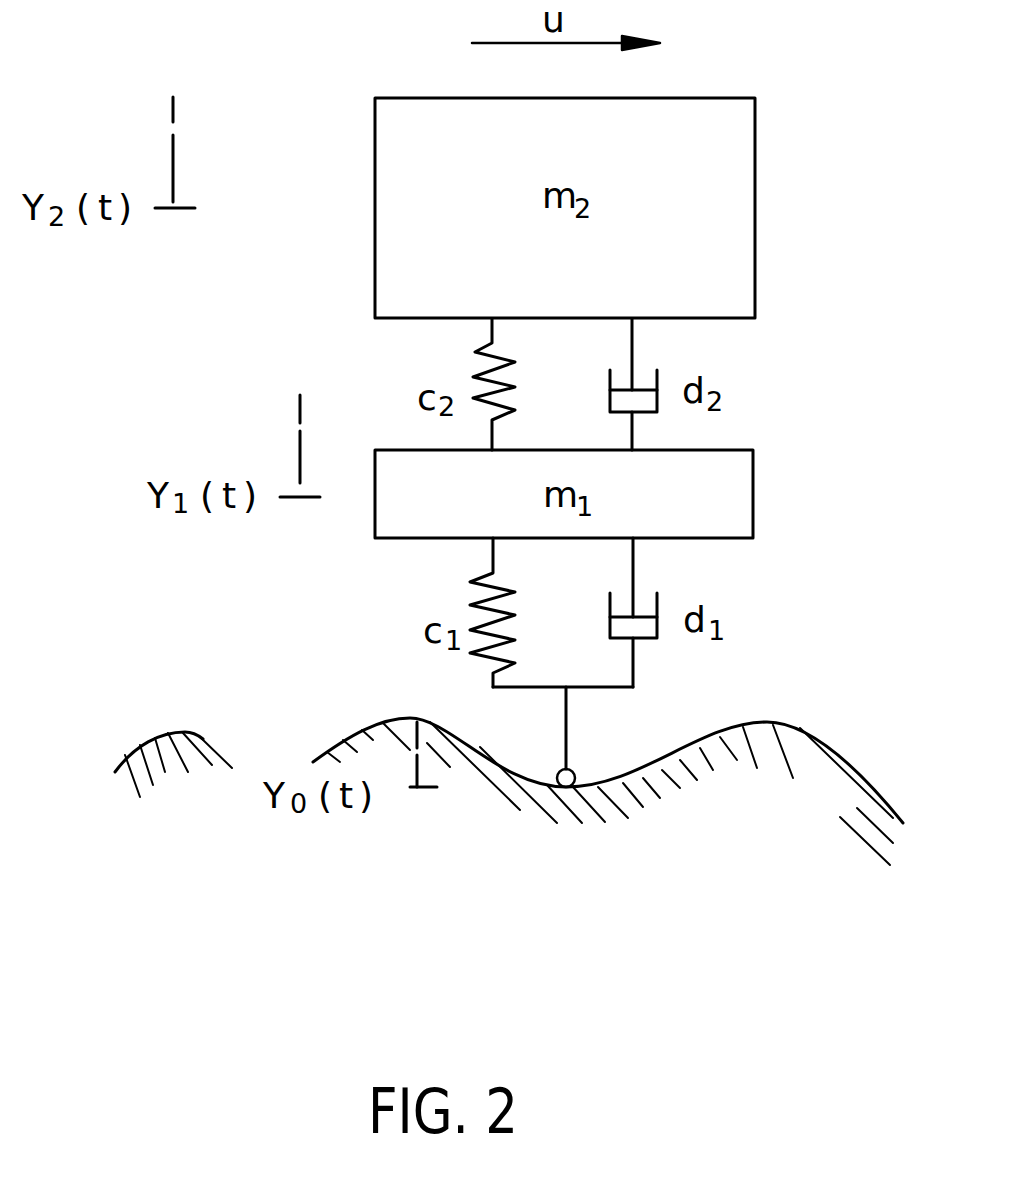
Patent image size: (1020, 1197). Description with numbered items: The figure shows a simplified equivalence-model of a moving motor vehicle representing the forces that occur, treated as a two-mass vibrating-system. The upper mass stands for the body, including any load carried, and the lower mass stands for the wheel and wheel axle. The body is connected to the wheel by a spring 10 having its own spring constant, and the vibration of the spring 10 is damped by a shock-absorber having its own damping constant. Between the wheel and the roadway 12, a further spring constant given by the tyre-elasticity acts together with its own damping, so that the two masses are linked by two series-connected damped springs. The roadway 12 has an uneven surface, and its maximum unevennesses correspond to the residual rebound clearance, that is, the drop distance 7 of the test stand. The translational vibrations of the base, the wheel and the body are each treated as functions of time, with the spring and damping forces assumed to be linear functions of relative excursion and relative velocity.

The spring 10 is at (478, 353).
The drop distance 7 is at (412, 787).
The roadway 12 is at (768, 723).